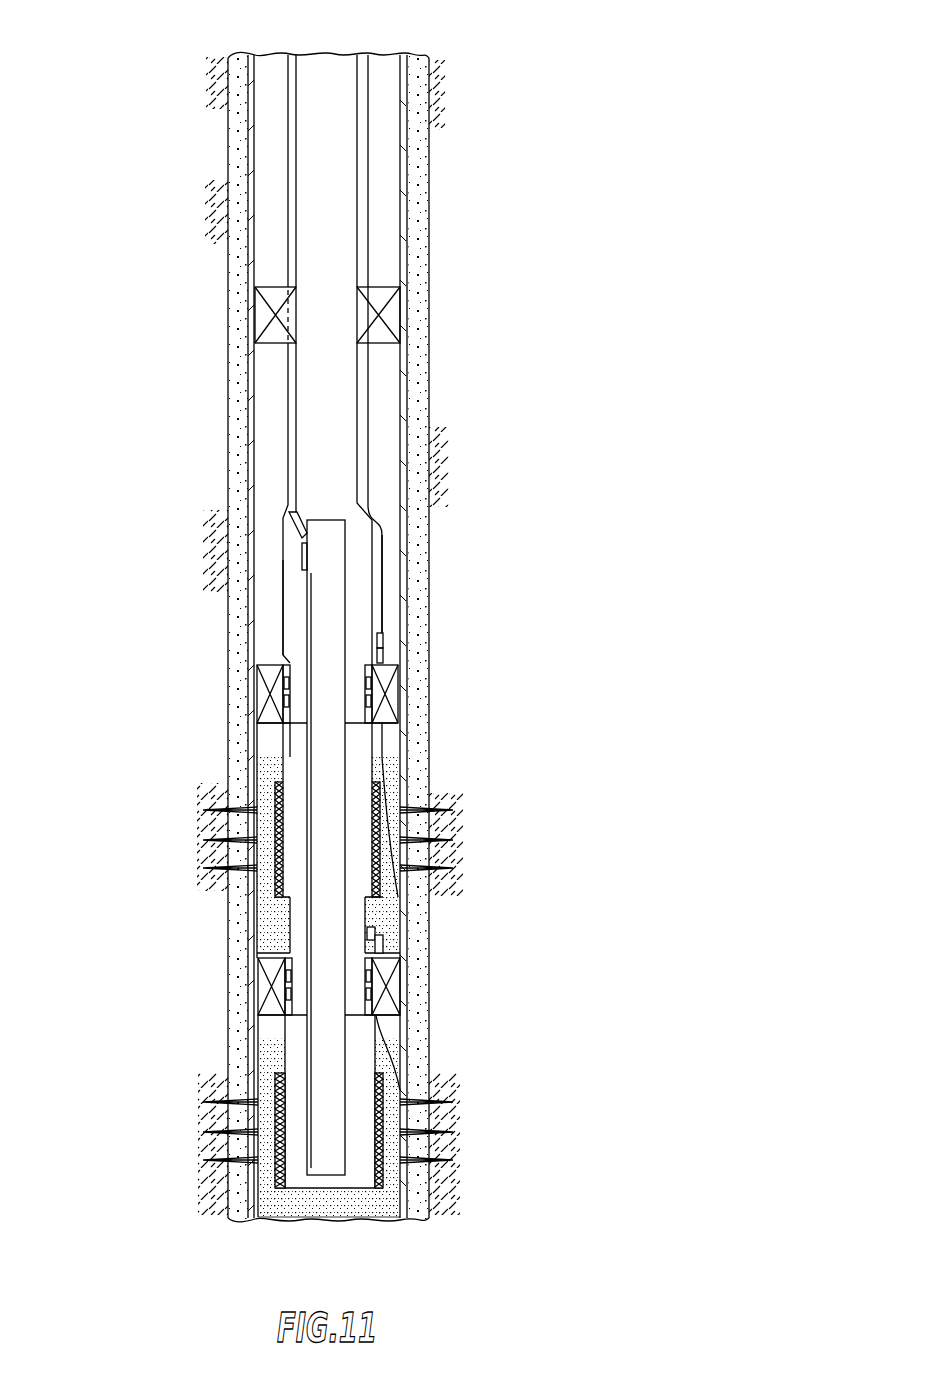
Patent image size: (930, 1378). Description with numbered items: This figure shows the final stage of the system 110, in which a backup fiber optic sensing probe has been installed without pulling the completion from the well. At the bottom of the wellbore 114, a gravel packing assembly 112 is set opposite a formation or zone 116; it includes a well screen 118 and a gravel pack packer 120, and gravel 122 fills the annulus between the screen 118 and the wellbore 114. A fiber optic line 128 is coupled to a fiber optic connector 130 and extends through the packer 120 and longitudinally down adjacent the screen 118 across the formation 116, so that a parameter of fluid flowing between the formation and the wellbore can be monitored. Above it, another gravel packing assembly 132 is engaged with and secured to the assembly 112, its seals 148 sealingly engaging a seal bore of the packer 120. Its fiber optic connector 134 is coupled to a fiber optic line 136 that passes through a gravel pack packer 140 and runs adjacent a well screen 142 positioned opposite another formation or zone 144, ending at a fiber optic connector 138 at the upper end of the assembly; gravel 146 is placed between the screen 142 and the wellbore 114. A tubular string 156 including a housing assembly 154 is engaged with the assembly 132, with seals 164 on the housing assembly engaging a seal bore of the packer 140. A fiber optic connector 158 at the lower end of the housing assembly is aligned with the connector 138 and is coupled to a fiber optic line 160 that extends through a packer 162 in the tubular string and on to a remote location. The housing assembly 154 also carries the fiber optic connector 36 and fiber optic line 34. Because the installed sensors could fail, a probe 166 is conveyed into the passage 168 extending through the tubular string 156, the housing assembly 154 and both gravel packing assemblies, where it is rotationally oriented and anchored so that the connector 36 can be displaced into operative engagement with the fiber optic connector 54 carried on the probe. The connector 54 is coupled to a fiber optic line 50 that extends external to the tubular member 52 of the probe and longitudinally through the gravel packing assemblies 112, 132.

The system 110 is at (598, 105).
The gravel packing assembly 112 is at (400, 1048).
The wellbore 114 is at (397, 172).
The formation or zone 116 is at (465, 1145).
The well screen 118 is at (274, 1174).
The gravel pack packer 120 is at (258, 985).
The gravel 122 is at (388, 1205).
The fiber optic line 128 is at (392, 1065).
The fiber optic connector 130 is at (386, 950).
The gravel packing assembly 132 is at (407, 767).
The fiber optic connector 134 is at (386, 934).
The fiber optic line 136 is at (400, 788).
The fiber optic connector 138 is at (386, 660).
The gravel pack packer 140 is at (257, 692).
The well screen 142 is at (257, 887).
The formation or zone 144 is at (200, 838).
The gravel 146 is at (290, 940).
The seals 148 is at (286, 993).
The housing assembly 154 is at (390, 540).
The tubular string 156 is at (357, 218).
The fiber optic connector 158 is at (386, 642).
The fiber optic line 160 is at (372, 248).
The packer 162 is at (255, 317).
The seals 164 is at (284, 702).
The probe 166 is at (349, 583).
The passage 168 is at (295, 622).
The fiber optic line 34 is at (288, 432).
The fiber optic connector 36 is at (298, 524).
The fiber optic line 50 is at (303, 748).
The tubular member 52 is at (347, 740).
The fiber optic connector 54 is at (302, 558).